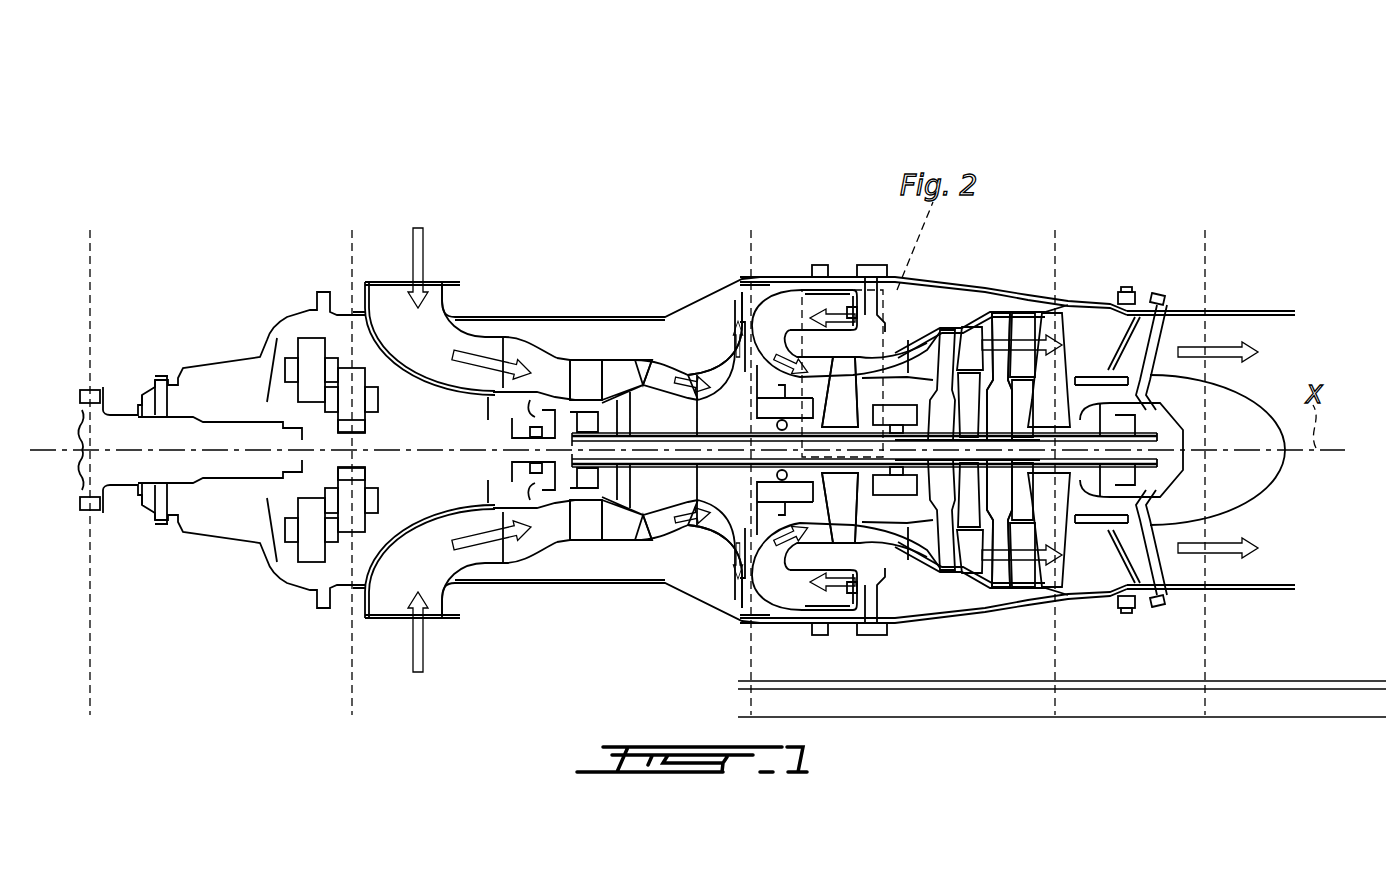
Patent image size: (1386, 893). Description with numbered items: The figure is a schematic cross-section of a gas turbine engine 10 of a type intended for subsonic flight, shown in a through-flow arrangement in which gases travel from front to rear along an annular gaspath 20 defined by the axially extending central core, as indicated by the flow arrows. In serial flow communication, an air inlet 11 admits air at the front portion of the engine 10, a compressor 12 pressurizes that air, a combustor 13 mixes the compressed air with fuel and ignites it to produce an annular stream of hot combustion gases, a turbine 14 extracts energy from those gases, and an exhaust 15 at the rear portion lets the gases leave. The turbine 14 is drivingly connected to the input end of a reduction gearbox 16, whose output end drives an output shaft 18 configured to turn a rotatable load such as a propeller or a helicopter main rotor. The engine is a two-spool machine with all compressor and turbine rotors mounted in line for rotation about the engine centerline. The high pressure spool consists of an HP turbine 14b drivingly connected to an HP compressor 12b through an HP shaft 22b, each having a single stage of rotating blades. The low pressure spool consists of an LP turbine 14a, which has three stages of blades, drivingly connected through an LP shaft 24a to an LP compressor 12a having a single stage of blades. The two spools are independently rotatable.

The gas turbine engine 10 is at (590, 157).
The air inlet 11 is at (384, 304).
The compressor 12 is at (693, 552).
The LP compressor 12a is at (622, 375).
The HP compressor 12b is at (718, 375).
The combustor 13 is at (796, 310).
The turbine 14 is at (895, 568).
The LP turbine 14a is at (988, 308).
The HP turbine 14b is at (820, 500).
The exhaust 15 is at (1262, 331).
The reduction gearbox 16 is at (298, 560).
The output shaft 18 is at (120, 437).
The annular gaspath 20 is at (585, 375).
The HP shaft 22b is at (826, 310).
The LP shaft 24a is at (706, 520).